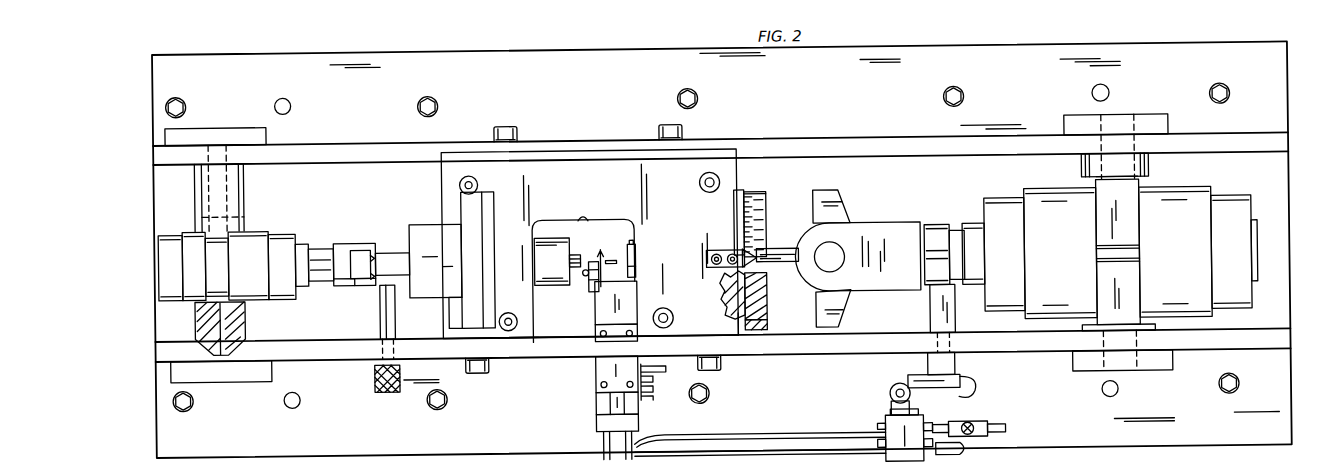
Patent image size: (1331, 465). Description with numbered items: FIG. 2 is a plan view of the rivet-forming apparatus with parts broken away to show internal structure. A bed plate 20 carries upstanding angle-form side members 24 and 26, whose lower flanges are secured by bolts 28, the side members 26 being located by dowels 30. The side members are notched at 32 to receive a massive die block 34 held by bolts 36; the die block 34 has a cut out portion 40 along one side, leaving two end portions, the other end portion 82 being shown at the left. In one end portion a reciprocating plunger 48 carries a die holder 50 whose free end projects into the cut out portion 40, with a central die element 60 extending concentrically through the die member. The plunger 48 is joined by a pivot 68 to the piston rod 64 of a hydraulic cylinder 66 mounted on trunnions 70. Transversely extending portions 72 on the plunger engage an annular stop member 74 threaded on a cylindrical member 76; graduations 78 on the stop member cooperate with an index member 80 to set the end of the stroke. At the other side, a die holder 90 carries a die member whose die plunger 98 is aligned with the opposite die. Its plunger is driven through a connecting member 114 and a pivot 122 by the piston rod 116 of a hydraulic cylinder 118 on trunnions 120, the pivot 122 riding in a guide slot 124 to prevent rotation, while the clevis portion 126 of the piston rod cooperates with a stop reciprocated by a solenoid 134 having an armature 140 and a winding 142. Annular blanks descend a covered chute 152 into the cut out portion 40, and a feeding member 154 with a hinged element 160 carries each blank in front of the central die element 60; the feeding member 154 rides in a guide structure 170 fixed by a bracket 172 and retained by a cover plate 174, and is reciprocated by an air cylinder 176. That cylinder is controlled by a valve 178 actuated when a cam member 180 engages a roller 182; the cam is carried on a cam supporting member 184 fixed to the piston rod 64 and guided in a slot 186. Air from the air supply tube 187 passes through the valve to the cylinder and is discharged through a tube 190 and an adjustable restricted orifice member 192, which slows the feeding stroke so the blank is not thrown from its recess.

The bed plate 20 is at (1279, 179).
The side member 24 is at (1179, 146).
The side member 26 is at (1256, 352).
The bolts 28 is at (432, 102).
The dowels 30 is at (289, 103).
The notches 32 is at (591, 252).
The die block 34 is at (598, 163).
The bolts 36 is at (505, 132).
The cut out portion 40 is at (596, 226).
The plunger 48 is at (776, 264).
The die holder 50 is at (633, 257).
The central die element 60 is at (605, 265).
The piston rod 64 is at (925, 234).
The hydraulic cylinder 66 is at (1061, 326).
The pivot 68 is at (831, 261).
The trunnions 70 is at (1119, 154).
The transversely extending portions 72 is at (832, 213).
The annular stop member 74 is at (764, 331).
The cylindrical member 76 is at (764, 314).
The graduations 78 is at (764, 211).
The index member 80 is at (738, 260).
The end portion 82 is at (527, 356).
The die holder 90 is at (553, 243).
The die plunger 98 is at (576, 260).
The connecting member 114 is at (359, 250).
The piston rod 116 is at (321, 251).
The hydraulic cylinder 118 is at (258, 236).
The trunnions 120 is at (243, 226).
The pivot 122 is at (392, 326).
The guide slot 124 is at (352, 360).
The clevis portion 126 is at (367, 290).
The solenoid 134 is at (451, 257).
The armature 140 is at (422, 257).
The winding 142 is at (733, 342).
The chute 152 is at (606, 322).
The feeding member 154 is at (599, 320).
The hinged element 160 is at (583, 283).
The guide structure 170 is at (634, 428).
The bracket 172 is at (645, 379).
The cover plate 174 is at (603, 376).
The air cylinder 176 is at (601, 455).
The valve 178 is at (881, 437).
The cam member 180 is at (940, 398).
The roller 182 is at (898, 393).
The cam supporting member 184 is at (927, 316).
The slot 186 is at (960, 365).
The air supply tube 187 is at (963, 432).
The tube 190 is at (819, 437).
The adjustable restricted orifice member 192 is at (976, 447).